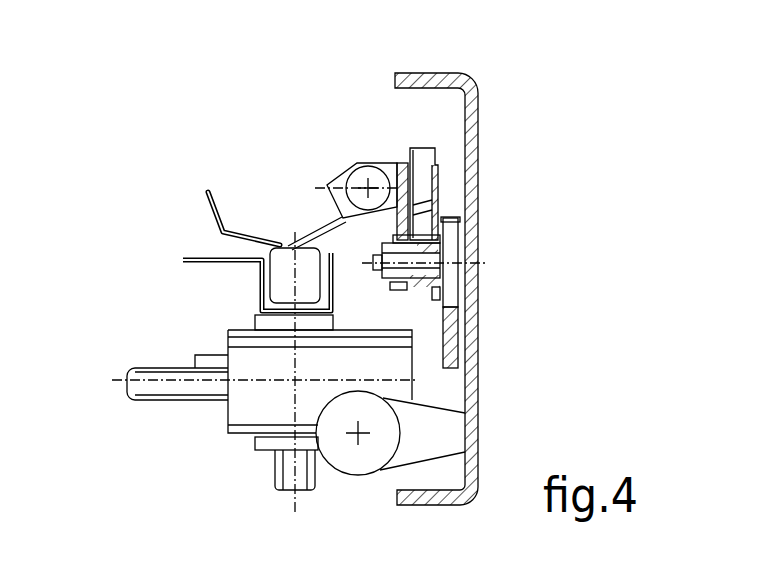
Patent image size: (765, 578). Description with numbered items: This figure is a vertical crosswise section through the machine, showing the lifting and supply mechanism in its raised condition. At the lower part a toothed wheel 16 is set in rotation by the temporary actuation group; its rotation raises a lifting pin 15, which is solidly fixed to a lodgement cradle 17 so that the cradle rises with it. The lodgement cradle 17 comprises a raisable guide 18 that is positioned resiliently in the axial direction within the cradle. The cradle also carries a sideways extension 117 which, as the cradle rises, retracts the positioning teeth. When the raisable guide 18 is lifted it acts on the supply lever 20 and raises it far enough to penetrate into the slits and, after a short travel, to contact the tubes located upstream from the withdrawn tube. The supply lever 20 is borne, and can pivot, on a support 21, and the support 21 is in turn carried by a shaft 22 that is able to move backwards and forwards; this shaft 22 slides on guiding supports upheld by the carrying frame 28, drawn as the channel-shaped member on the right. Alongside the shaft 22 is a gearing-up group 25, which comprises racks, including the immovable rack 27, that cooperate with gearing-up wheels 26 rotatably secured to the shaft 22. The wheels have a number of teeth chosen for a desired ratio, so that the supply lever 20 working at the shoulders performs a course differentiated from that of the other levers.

The lifting pin 15 is at (285, 467).
The toothed wheel 16 is at (150, 388).
The lodgement cradle 17 is at (265, 302).
The raisable guide 18 is at (280, 285).
The supply lever 20 is at (206, 195).
The support 21 is at (392, 165).
The shaft 22 is at (432, 157).
The gearing-up group 25 is at (458, 255).
The gearing-up wheel 26 is at (443, 281).
The rack 27 is at (452, 342).
The carrying frame 28 is at (448, 75).
The sideways extension 117 is at (190, 258).